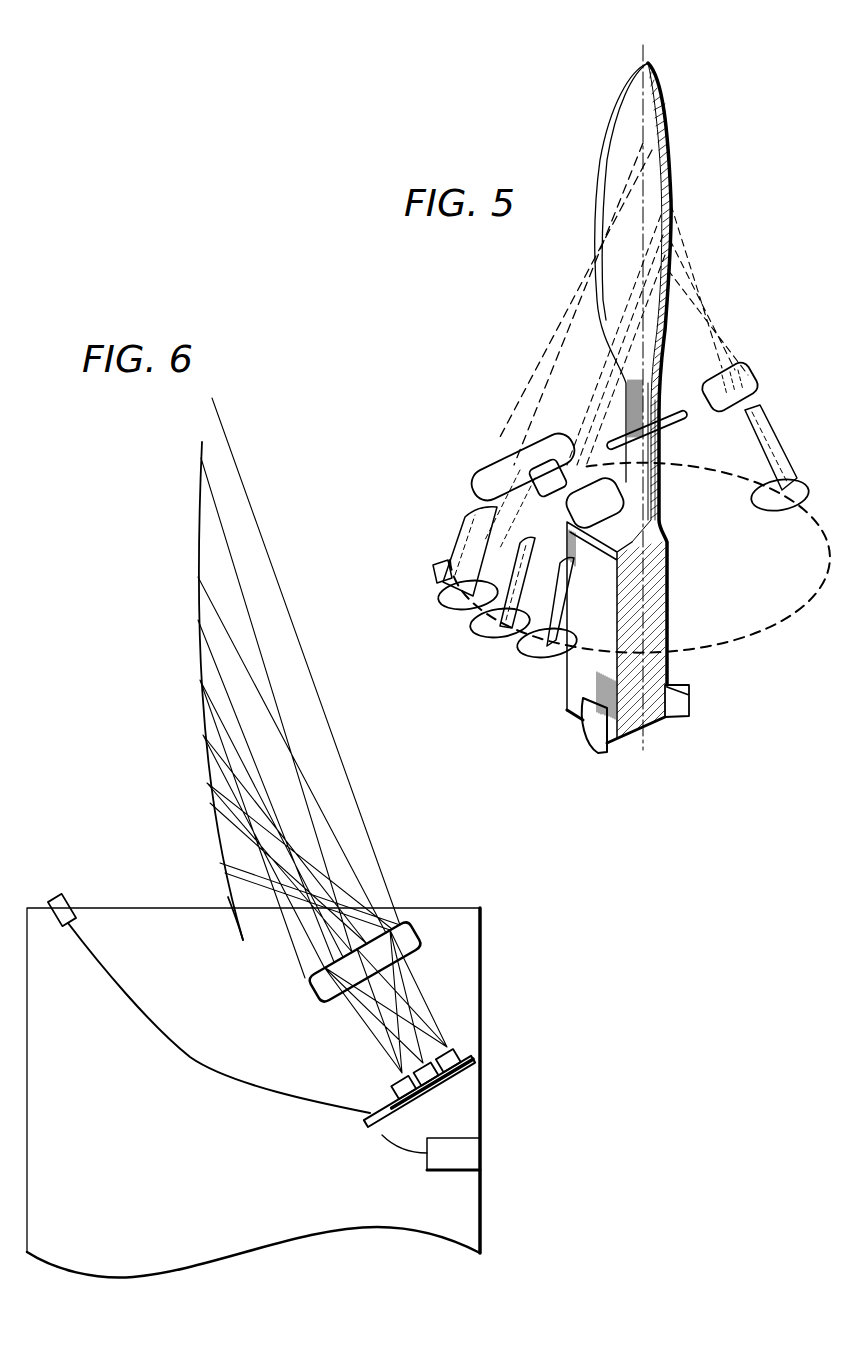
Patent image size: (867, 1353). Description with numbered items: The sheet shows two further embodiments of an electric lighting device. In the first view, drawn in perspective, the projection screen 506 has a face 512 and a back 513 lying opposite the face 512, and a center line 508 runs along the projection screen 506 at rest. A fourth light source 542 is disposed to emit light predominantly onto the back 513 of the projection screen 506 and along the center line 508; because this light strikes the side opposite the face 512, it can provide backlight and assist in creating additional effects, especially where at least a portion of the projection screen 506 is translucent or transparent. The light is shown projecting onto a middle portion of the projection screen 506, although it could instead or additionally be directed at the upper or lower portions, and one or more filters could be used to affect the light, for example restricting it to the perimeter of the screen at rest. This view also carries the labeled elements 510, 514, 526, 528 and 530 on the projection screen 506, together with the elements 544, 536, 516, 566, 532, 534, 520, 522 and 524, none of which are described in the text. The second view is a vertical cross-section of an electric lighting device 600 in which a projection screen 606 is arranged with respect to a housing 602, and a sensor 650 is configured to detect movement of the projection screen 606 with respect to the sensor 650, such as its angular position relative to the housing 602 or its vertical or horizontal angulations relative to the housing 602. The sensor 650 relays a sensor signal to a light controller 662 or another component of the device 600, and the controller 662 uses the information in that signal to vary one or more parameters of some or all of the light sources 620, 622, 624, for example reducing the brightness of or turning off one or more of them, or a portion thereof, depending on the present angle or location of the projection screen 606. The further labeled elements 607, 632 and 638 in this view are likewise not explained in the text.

In FIG. 5, the projection screen 506 is at (650, 66).
In FIG. 5, the blade bevel edge 510 is at (613, 105).
In FIG. 5, the face 512 is at (622, 142).
In FIG. 5, the light beam from blade edge 526 is at (644, 140).
In FIG. 5, the center line 508 is at (647, 190).
In FIG. 5, the blade edge facet 514 is at (670, 206).
In FIG. 5, the back 513 is at (673, 252).
In FIG. 5, the blade neck 528 is at (643, 303).
In FIG. 5, the blade edge lower portion 530 is at (643, 368).
In FIG. 5, the second lens 544 is at (757, 391).
In FIG. 5, the fourth light source 542 is at (787, 510).
In FIG. 5, the handle bar 536 is at (610, 537).
In FIG. 5, the blade holder base 516 is at (672, 600).
In FIG. 5, the rotation path 566 is at (730, 645).
In FIG. 5, the first lens 532 is at (472, 450).
In FIG. 5, the filter assembly 534 is at (530, 498).
In FIG. 5, the first sensor 520 is at (445, 608).
In FIG. 5, the second sensor 522 is at (482, 633).
In FIG. 5, the third sensor 524 is at (523, 668).
In FIG. 6, the projection screen 606 is at (198, 482).
In FIG. 6, the blade edge end portion 607 is at (228, 896).
In FIG. 6, the sensor 650 is at (52, 897).
In FIG. 6, the lens 632 is at (417, 937).
In FIG. 6, the electric lighting device 600 is at (540, 932).
In FIG. 6, the light source 624 is at (460, 1050).
In FIG. 6, the sensor gap 638 is at (472, 1067).
In FIG. 6, the light source 622 is at (432, 1077).
In FIG. 6, the light source 620 is at (410, 1092).
In FIG. 6, the light controller 662 is at (467, 1155).
In FIG. 6, the housing 602 is at (483, 1203).